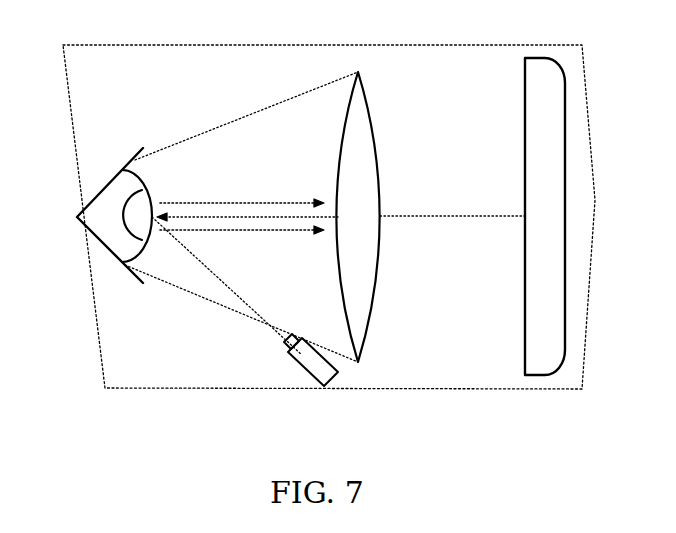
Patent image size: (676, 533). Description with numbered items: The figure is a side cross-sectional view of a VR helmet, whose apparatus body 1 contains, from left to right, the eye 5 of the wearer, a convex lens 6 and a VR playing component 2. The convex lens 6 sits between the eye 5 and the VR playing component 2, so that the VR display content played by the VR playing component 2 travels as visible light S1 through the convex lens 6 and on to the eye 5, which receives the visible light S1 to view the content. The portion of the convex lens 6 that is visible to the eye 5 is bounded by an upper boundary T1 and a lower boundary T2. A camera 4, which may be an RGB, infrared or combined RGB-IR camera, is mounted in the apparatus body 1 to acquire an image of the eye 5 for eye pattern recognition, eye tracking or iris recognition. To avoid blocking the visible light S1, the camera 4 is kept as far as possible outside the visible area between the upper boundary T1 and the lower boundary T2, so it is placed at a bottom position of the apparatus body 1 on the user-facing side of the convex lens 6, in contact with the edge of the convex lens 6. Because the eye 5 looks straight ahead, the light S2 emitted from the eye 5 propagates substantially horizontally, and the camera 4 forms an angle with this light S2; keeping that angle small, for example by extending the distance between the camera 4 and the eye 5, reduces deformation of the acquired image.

The apparatus body 1 is at (438, 45).
The VR playing component 2 is at (540, 362).
The camera 4 is at (317, 365).
The eye 5 is at (100, 176).
The convex lens 6 is at (359, 364).
The visible light S1 is at (443, 214).
The light emitted from the eye S2 is at (232, 201).
The upper boundary T1 is at (170, 148).
The lower boundary T2 is at (187, 290).